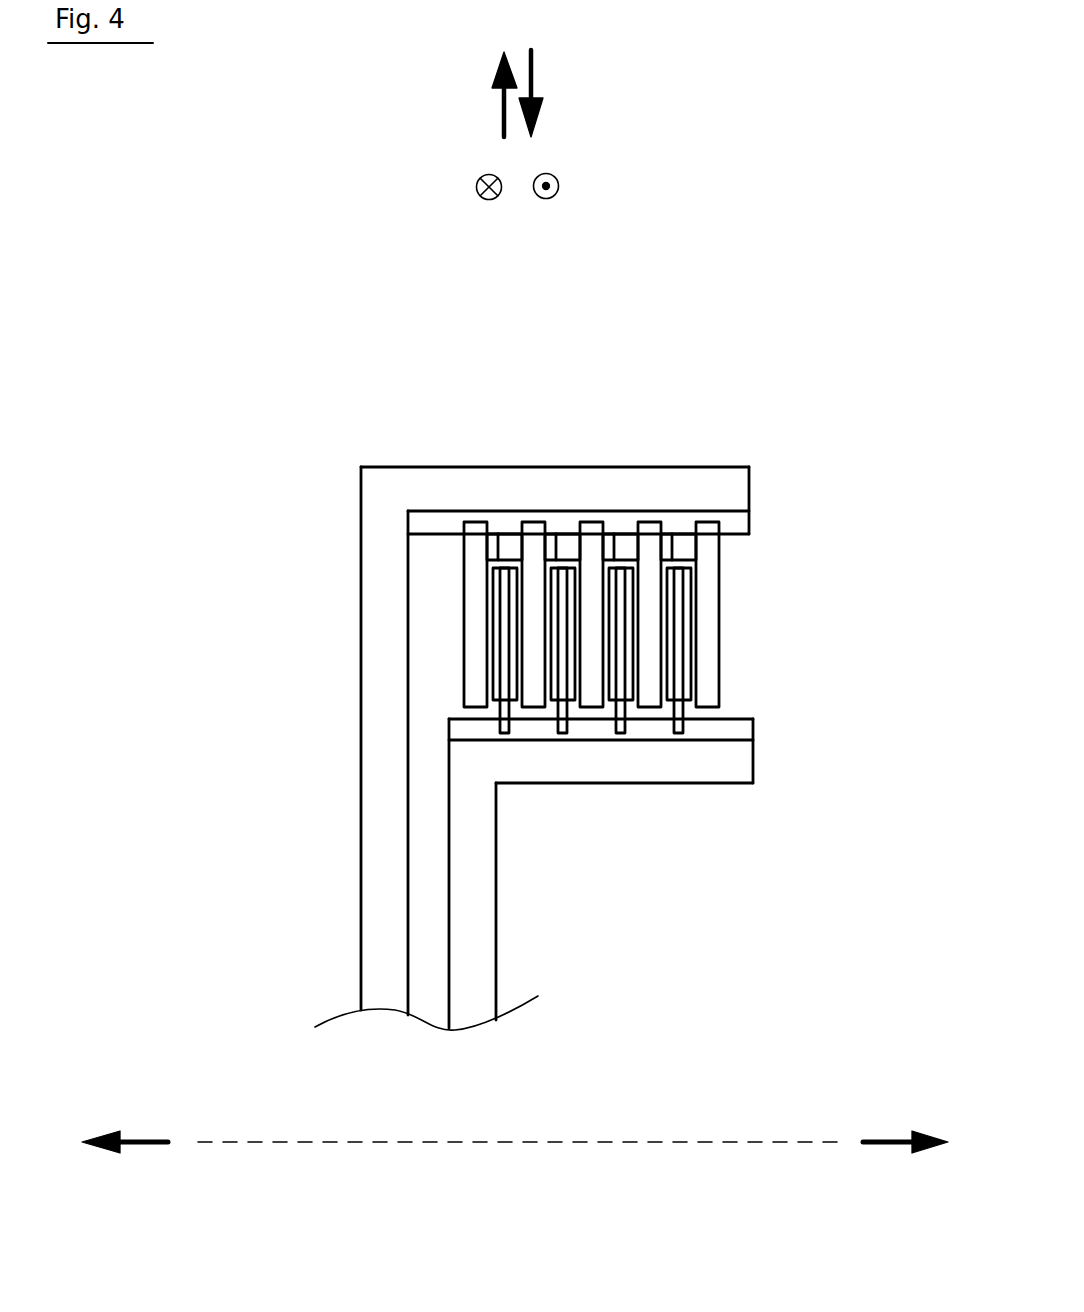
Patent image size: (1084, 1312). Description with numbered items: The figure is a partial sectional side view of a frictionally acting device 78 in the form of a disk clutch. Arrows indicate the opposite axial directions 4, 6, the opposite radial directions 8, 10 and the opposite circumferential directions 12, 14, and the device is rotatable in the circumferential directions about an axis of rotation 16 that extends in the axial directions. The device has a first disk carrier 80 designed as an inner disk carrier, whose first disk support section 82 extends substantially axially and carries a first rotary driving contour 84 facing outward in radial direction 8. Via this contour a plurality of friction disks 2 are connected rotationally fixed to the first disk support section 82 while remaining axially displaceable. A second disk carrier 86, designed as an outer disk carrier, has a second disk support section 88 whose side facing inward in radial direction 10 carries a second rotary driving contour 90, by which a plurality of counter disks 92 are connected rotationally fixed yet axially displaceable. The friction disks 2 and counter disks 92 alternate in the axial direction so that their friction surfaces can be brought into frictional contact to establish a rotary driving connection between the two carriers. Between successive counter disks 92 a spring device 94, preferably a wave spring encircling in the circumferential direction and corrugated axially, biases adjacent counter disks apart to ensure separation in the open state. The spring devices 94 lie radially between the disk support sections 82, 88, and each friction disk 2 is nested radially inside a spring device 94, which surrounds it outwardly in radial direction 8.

The friction disk 2 is at (505, 692).
The axial direction 4 is at (143, 1145).
The axial direction 6 is at (890, 1143).
The radial direction 8 is at (504, 102).
The radial direction 10 is at (533, 77).
The circumferential direction 12 is at (479, 192).
The circumferential direction 14 is at (557, 192).
The axis of rotation 16 is at (610, 1143).
The frictionally acting device 78 is at (834, 393).
The first disk carrier 80 is at (500, 934).
The first disk support section 82 is at (732, 762).
The first rotary driving contour 84 is at (742, 733).
The second disk carrier 86 is at (356, 916).
The second disk support section 88 is at (717, 485).
The second rotary driving contour 90 is at (740, 518).
The counter disk 92 is at (473, 557).
The spring device 94 is at (507, 543).